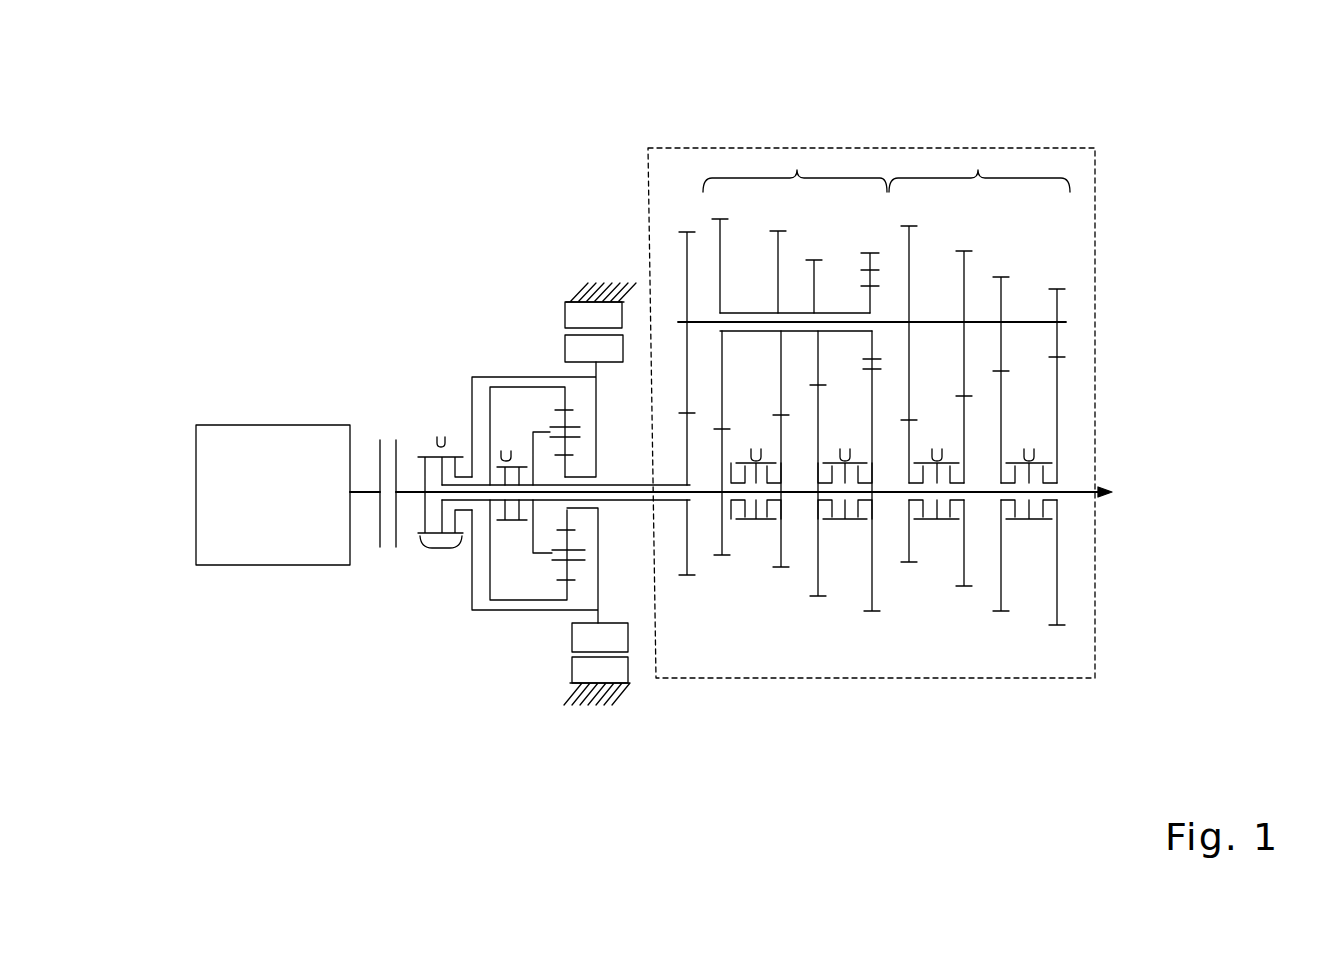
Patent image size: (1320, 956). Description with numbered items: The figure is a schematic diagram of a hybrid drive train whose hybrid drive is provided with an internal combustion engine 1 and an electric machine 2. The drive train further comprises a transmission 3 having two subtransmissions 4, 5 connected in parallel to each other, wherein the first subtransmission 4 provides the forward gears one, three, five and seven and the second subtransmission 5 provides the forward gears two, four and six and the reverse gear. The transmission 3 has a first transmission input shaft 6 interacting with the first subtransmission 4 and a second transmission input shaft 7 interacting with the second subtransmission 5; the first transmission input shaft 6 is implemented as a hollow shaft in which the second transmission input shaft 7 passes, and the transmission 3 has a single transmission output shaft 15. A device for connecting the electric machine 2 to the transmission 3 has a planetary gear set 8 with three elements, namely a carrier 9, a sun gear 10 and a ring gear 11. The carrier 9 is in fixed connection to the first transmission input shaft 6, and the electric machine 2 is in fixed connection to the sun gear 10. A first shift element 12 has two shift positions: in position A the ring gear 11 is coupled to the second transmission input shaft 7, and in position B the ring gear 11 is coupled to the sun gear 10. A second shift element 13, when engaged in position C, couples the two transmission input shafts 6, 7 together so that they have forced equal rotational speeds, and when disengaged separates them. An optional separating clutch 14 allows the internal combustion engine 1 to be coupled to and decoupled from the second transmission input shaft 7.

The internal combustion engine 1 is at (292, 458).
The electric machine 2 is at (600, 275).
The transmission 3 is at (1050, 143).
The first subtransmission 4 is at (978, 174).
The second subtransmission 5 is at (797, 174).
The first transmission input shaft 6 is at (638, 502).
The second transmission input shaft 7 is at (705, 495).
The planetary gear set 8 is at (522, 360).
The carrier 9 is at (534, 522).
The sun gear 10 is at (565, 518).
The ring gear 11 is at (560, 405).
The first shift element 12 is at (440, 552).
The second shift element 13 is at (500, 412).
The separating clutch 14 is at (386, 550).
The transmission output shaft 15 is at (1088, 496).